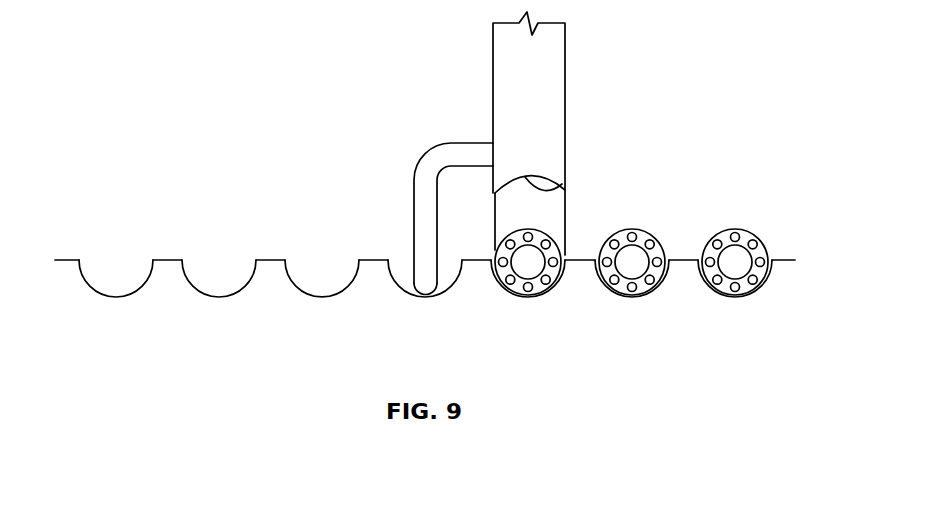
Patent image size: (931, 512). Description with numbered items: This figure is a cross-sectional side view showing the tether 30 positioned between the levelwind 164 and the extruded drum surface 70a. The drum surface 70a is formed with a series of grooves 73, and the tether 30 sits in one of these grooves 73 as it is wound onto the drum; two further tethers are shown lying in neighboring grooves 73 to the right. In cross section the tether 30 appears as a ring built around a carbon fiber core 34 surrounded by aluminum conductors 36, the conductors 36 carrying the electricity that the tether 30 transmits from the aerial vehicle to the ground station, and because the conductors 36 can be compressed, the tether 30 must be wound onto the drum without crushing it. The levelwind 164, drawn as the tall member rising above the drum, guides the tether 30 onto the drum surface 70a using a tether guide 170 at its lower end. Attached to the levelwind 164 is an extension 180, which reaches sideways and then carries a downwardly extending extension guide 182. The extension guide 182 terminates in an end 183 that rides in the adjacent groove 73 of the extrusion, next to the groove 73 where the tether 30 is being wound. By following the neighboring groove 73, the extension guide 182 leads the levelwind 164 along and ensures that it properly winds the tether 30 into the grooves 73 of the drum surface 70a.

The tether 30 is at (565, 218).
The carbon fiber core 34 is at (731, 263).
The aluminum conductors 36 is at (764, 260).
The drum surface 70a is at (270, 258).
The groove 73 is at (322, 298).
The levelwind 164 is at (543, 92).
The tether guide 170 is at (560, 186).
The extension 180 is at (440, 143).
The extension guide 182 is at (425, 270).
The end 183 is at (434, 296).